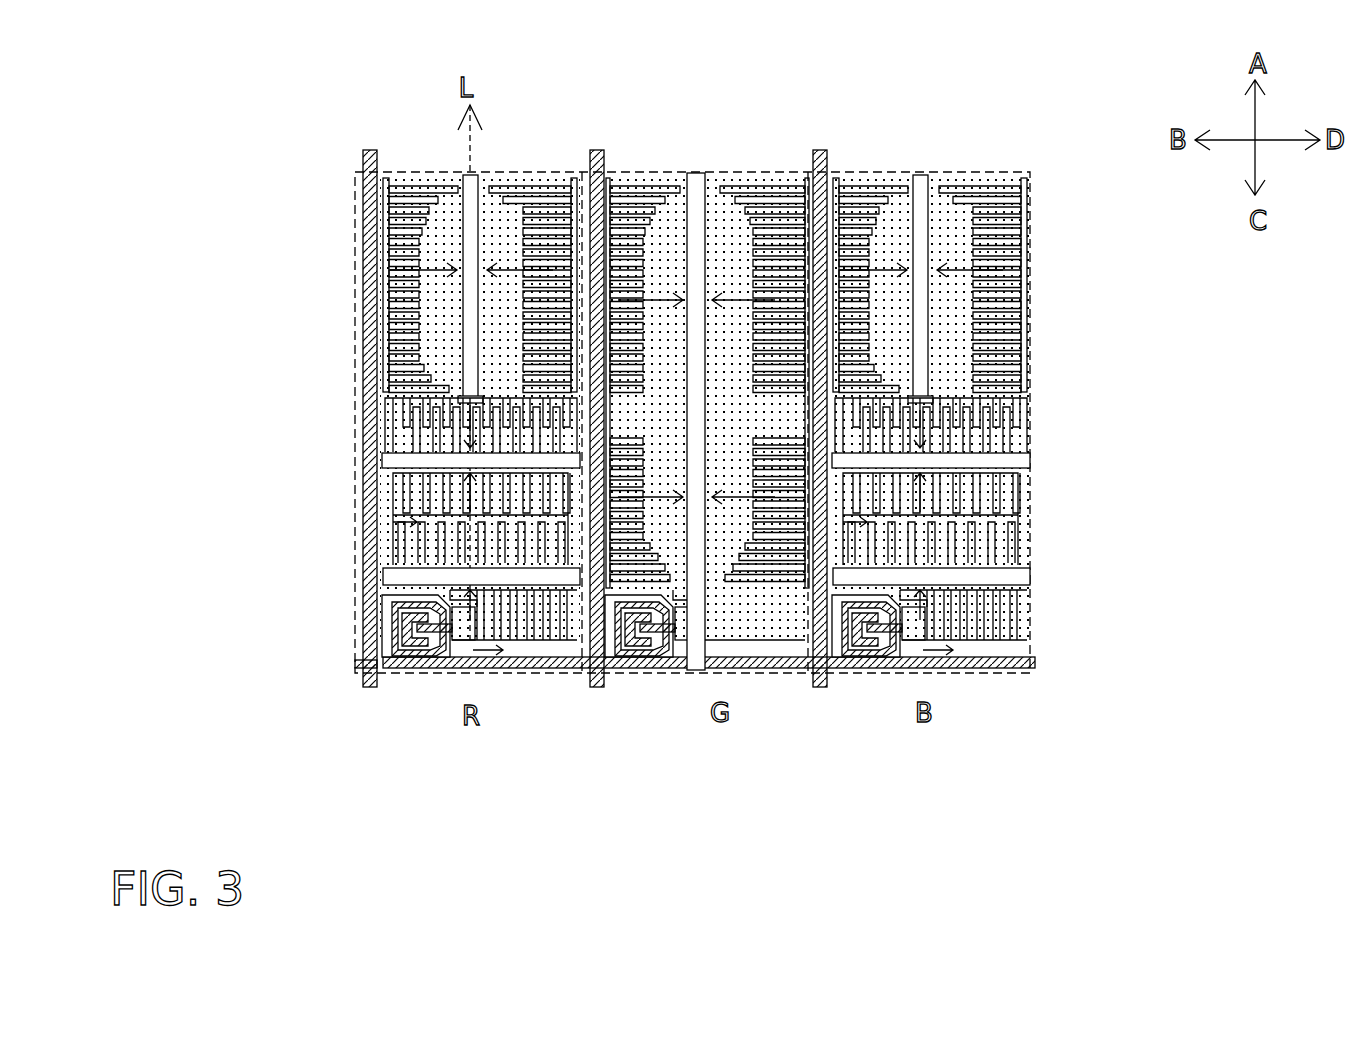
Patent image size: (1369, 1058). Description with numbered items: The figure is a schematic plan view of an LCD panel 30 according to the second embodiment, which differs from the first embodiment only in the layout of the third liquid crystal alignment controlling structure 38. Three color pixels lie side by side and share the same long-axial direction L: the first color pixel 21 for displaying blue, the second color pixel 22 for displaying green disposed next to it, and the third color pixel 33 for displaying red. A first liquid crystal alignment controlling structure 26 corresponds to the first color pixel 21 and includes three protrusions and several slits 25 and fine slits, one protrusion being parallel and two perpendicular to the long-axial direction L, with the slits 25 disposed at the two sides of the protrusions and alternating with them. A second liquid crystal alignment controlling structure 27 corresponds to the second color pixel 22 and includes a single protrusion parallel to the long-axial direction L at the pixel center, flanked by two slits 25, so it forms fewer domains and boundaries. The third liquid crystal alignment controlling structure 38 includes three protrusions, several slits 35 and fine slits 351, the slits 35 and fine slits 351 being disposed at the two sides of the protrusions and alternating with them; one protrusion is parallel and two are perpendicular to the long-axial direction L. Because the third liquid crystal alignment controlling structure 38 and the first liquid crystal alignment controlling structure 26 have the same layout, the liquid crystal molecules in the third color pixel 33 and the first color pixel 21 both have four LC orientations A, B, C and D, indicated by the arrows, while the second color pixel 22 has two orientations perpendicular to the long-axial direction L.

The LCD panel 30 is at (72, 124).
The first color pixel 21 is at (912, 165).
The second color pixel 22 is at (688, 165).
The slit 25 is at (822, 152).
The first liquid crystal alignment controlling structure 26 is at (1228, 318).
The second liquid crystal alignment controlling structure 27 is at (822, 805).
The third color pixel 33 is at (422, 165).
The slit 35 is at (377, 152).
The fine slit 351 is at (405, 288).
The third liquid crystal alignment controlling structure 38 is at (176, 318).